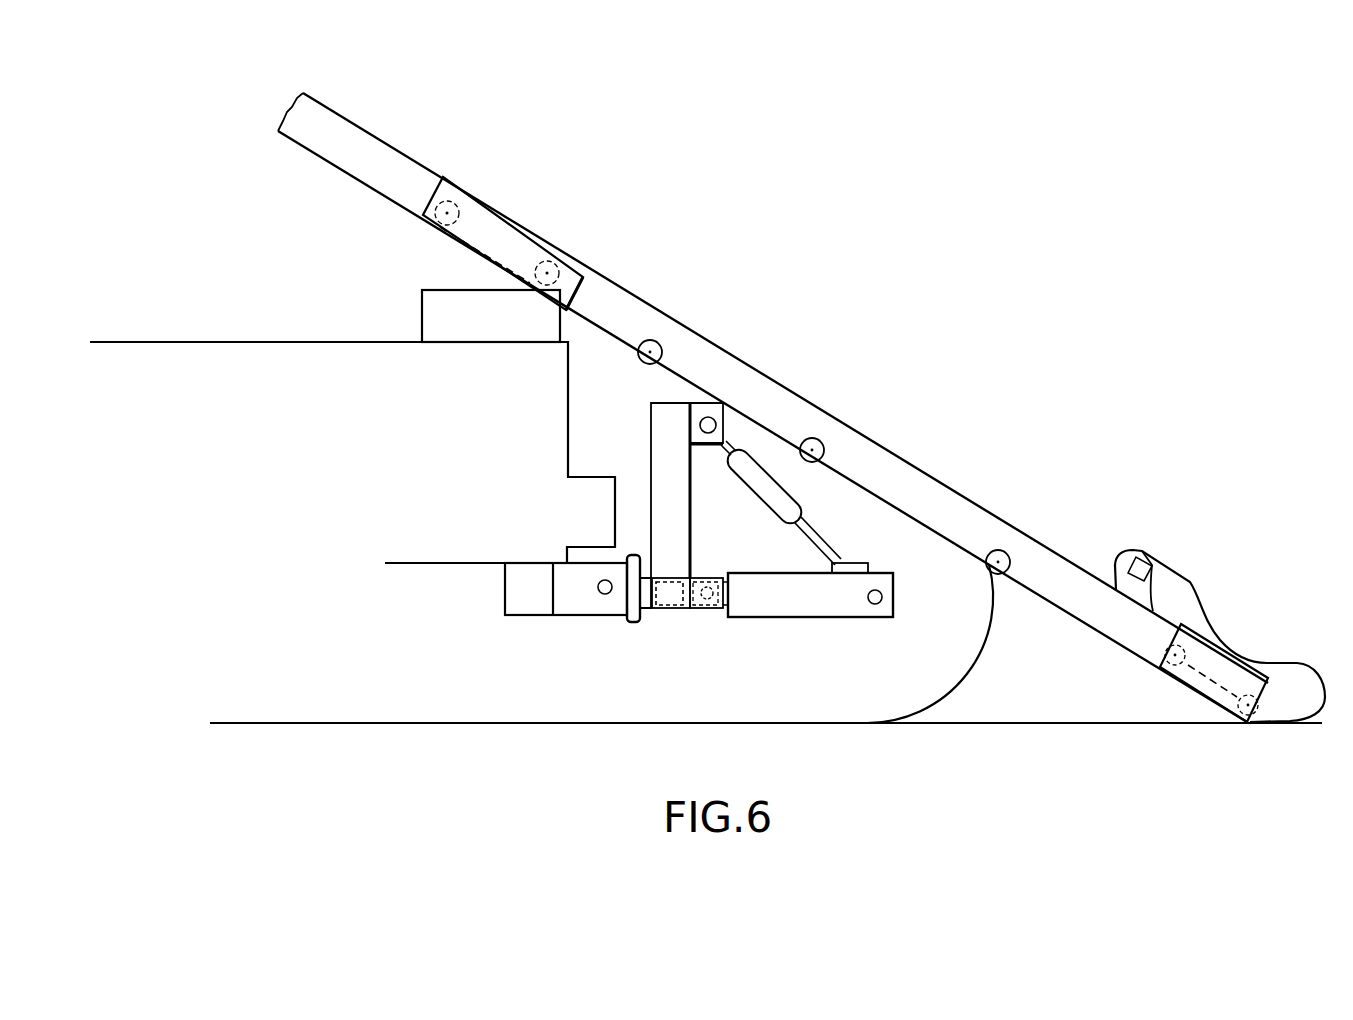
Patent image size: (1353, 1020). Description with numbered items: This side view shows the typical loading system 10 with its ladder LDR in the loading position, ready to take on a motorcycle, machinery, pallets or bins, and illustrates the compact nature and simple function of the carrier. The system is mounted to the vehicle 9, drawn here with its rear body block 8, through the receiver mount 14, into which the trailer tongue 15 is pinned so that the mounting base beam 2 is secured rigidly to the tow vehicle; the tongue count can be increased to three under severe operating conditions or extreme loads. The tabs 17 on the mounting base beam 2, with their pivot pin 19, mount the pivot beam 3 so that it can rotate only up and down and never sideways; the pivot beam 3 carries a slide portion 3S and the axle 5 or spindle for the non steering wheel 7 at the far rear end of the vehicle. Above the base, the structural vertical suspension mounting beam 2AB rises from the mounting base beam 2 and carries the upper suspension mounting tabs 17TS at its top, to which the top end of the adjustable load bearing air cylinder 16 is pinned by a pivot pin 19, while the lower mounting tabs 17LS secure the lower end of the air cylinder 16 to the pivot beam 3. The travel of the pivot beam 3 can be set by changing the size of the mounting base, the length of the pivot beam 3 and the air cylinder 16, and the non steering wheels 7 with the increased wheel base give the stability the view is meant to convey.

The ladder LDR is at (908, 467).
The loading system 10 is at (397, 191).
The roof block 8 is at (504, 318).
The vehicle 9 is at (485, 383).
The upright support column 2AB is at (648, 474).
The upper suspension mounting tabs 17TS is at (710, 405).
The pivot pin 19 is at (715, 423).
The air cylinder 16 is at (752, 497).
The tabs 17 is at (708, 577).
The mounting base beam 2 is at (670, 607).
The tongue 15 is at (652, 610).
The receiver mount 14 is at (592, 602).
The pivot beam 3 is at (810, 624).
The base plate slide 3S is at (752, 593).
The axle 5 is at (883, 594).
The mounting tabs 17LS is at (868, 563).
The non steering wheels 7 is at (990, 643).